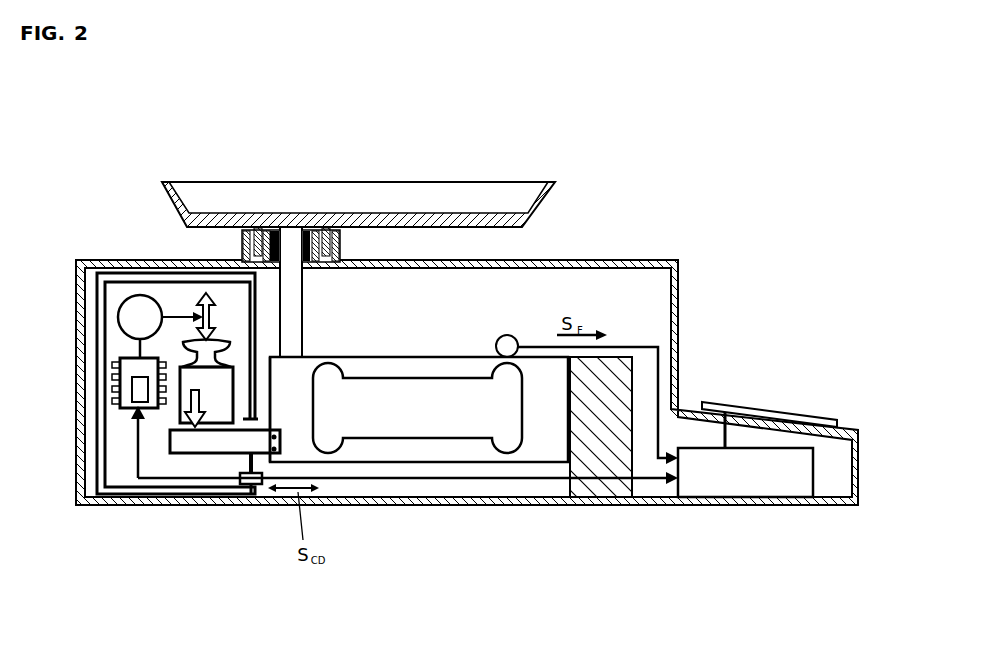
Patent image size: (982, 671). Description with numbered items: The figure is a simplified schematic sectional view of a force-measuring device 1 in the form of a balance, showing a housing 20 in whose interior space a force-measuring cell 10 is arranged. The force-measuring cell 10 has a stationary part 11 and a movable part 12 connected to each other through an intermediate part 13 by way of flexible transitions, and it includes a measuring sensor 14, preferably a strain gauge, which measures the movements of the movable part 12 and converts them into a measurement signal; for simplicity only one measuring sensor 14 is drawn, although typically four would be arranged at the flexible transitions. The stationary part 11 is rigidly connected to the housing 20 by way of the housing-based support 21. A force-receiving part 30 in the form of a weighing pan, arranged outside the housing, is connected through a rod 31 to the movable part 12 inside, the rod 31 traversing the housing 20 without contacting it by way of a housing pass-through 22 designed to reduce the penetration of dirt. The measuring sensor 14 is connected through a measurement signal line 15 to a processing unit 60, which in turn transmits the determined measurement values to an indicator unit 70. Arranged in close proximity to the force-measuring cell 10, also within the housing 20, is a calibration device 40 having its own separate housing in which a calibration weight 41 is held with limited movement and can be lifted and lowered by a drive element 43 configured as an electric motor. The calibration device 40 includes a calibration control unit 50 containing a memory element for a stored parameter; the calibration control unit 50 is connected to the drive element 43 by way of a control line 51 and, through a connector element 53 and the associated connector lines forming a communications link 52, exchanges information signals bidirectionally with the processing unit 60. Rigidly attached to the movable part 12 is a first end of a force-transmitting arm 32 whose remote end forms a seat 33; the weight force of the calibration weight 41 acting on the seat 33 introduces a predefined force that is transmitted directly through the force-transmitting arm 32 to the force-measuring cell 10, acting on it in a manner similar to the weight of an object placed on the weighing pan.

The force-measuring device 1 is at (100, 131).
The force-measuring cell 10 is at (419, 488).
The stationary part 11 is at (540, 440).
The movable part 12 is at (292, 420).
The intermediate part 13 is at (403, 453).
The measuring sensor 14 is at (500, 358).
The measurement signal line 15 is at (630, 345).
The housing 20 is at (233, 500).
The housing-based support 21 is at (595, 450).
The housing pass-through 22 is at (328, 233).
The force-receiving part 30 is at (222, 193).
The rod 31 is at (292, 325).
The force-transmitting arm 32 is at (226, 453).
The seat 33 is at (180, 453).
The calibration device 40 is at (122, 278).
The calibration weight 41 is at (95, 500).
The drive element 43 is at (117, 318).
The calibration control unit 50 is at (121, 398).
The control line 51 is at (137, 349).
The communications link 52 is at (217, 478).
The connector element 53 is at (251, 490).
The processing unit 60 is at (787, 488).
The indicator unit 70 is at (723, 402).